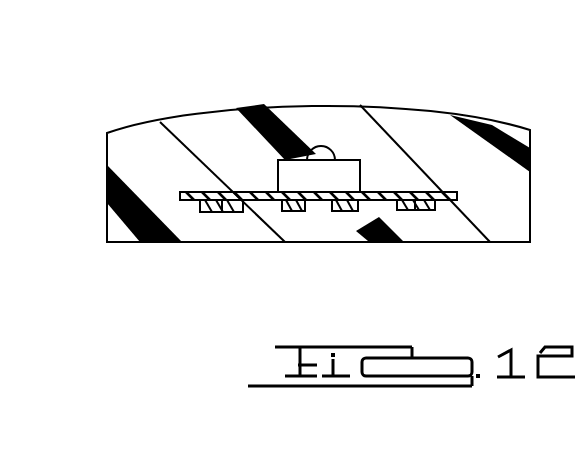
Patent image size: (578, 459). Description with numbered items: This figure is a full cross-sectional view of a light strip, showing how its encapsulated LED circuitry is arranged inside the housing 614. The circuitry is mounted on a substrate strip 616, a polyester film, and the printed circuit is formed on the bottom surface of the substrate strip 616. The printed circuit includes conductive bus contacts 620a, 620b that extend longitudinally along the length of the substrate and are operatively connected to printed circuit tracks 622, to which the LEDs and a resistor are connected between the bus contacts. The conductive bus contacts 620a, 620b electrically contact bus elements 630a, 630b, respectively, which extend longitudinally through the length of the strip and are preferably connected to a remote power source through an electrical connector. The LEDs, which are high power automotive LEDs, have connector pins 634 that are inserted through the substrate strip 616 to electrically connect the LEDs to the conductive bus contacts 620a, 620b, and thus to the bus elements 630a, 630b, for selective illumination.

The housing 614 is at (513, 127).
The substrate strip 616 is at (203, 192).
The conductive bus contact 620a is at (200, 212).
The conductive bus contact 620b is at (447, 204).
The printed circuit tracks 622 is at (283, 211).
The bus element 630a is at (240, 212).
The bus element 630b is at (435, 210).
The connector pins 634 is at (334, 211).